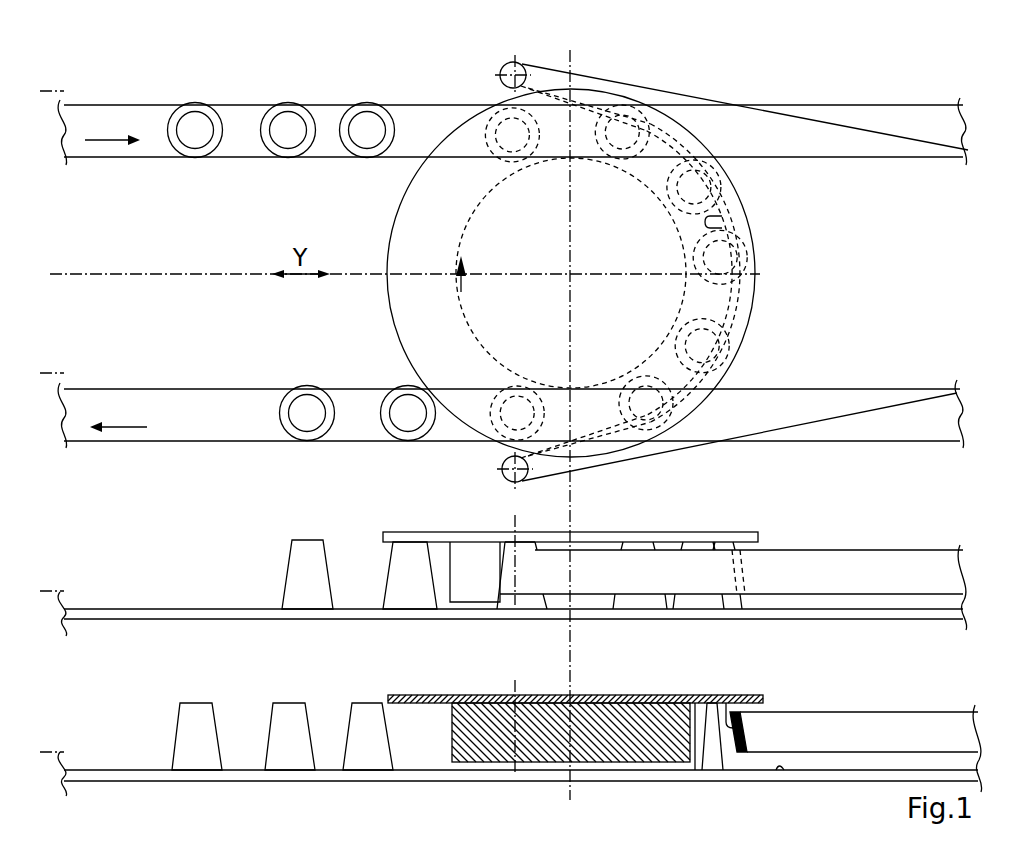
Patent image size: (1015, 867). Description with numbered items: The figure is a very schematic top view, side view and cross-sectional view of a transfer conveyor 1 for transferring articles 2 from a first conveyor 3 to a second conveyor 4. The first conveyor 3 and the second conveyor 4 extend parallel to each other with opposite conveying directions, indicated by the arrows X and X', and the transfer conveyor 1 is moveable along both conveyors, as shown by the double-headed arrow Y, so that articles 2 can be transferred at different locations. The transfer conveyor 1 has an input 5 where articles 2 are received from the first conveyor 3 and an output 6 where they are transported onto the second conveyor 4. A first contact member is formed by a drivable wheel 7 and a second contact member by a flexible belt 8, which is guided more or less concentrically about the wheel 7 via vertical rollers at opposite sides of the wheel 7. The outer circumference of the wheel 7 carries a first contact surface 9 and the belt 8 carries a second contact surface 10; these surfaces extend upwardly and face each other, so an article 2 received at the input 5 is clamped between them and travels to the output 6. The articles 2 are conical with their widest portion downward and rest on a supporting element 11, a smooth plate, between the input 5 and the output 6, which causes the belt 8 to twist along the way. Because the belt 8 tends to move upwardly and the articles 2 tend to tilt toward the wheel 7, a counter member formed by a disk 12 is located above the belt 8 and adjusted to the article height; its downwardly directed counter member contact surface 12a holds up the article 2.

The transfer conveyor 1 is at (866, 225).
The articles 2 is at (718, 258).
The first conveyor 3 is at (148, 140).
The second conveyor 4 is at (152, 395).
The input 5 is at (540, 112).
The output 6 is at (585, 420).
The drivable wheel 7 is at (478, 218).
The flexible belt 8 is at (825, 122).
The first contact surface 9 is at (452, 247).
The second contact surface 10 is at (722, 222).
The supporting element 11 is at (715, 305).
The disk 12 is at (735, 340).
The counter member contact surface 12a is at (720, 760).